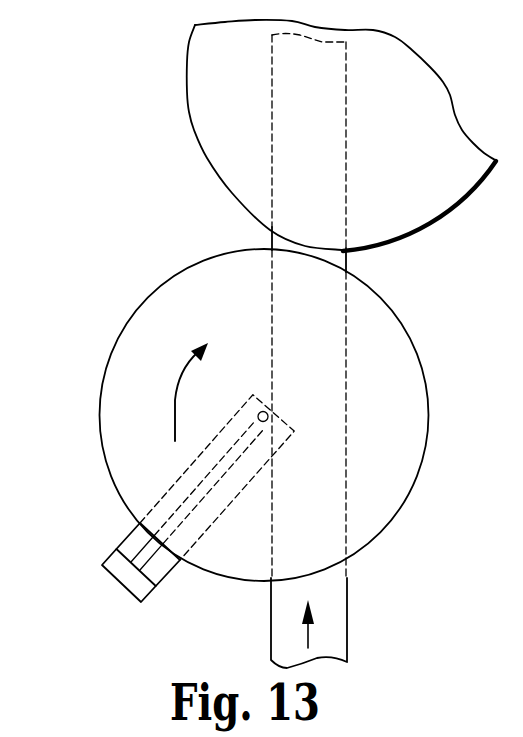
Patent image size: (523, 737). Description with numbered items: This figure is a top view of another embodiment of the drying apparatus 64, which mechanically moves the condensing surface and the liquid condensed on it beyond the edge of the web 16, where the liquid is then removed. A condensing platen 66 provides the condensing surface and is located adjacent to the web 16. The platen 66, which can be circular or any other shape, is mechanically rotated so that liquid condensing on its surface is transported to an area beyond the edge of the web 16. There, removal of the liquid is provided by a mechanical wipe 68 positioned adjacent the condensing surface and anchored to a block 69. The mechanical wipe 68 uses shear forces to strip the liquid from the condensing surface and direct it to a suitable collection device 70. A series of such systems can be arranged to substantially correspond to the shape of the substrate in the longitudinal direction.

The web 16 is at (325, 610).
The apparatus 64 is at (108, 235).
The condensing platen 66 is at (240, 182).
The mechanical wipe 68 is at (199, 508).
The block 69 is at (122, 578).
The collection device 70 is at (132, 544).